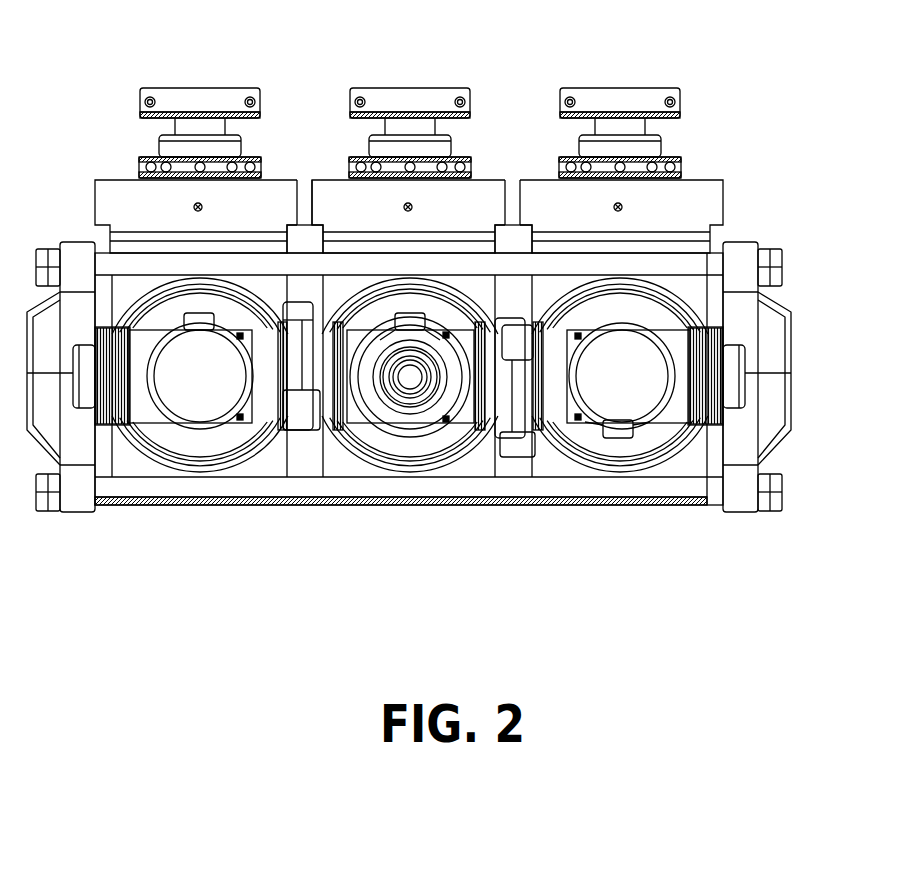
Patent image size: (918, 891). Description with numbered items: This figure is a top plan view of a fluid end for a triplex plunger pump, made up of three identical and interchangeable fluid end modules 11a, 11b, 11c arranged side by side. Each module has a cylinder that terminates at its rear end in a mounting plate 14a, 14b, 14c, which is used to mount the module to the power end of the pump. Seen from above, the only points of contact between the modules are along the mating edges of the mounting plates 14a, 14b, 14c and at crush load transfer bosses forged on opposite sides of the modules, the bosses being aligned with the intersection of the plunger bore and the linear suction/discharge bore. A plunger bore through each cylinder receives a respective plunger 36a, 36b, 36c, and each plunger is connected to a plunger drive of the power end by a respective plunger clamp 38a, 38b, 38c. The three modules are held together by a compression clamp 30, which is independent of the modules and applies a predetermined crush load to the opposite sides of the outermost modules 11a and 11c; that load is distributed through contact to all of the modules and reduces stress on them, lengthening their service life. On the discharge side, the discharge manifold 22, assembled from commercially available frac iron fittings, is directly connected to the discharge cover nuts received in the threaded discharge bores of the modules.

The compression clamp 30 is at (802, 349).
The plunger clamp 38a is at (620, 100).
The plunger clamp 38b is at (410, 100).
The plunger clamp 38c is at (200, 100).
The plunger 36a is at (642, 147).
The plunger 36b is at (430, 147).
The plunger 36c is at (220, 147).
The mounting plate 14a is at (548, 200).
The mounting plate 14b is at (335, 200).
The mounting plate 14c is at (118, 198).
The fluid end module 11a is at (130, 463).
The fluid end module 11b is at (331, 472).
The fluid end module 11c is at (549, 465).
The discharge manifold 22 is at (366, 430).